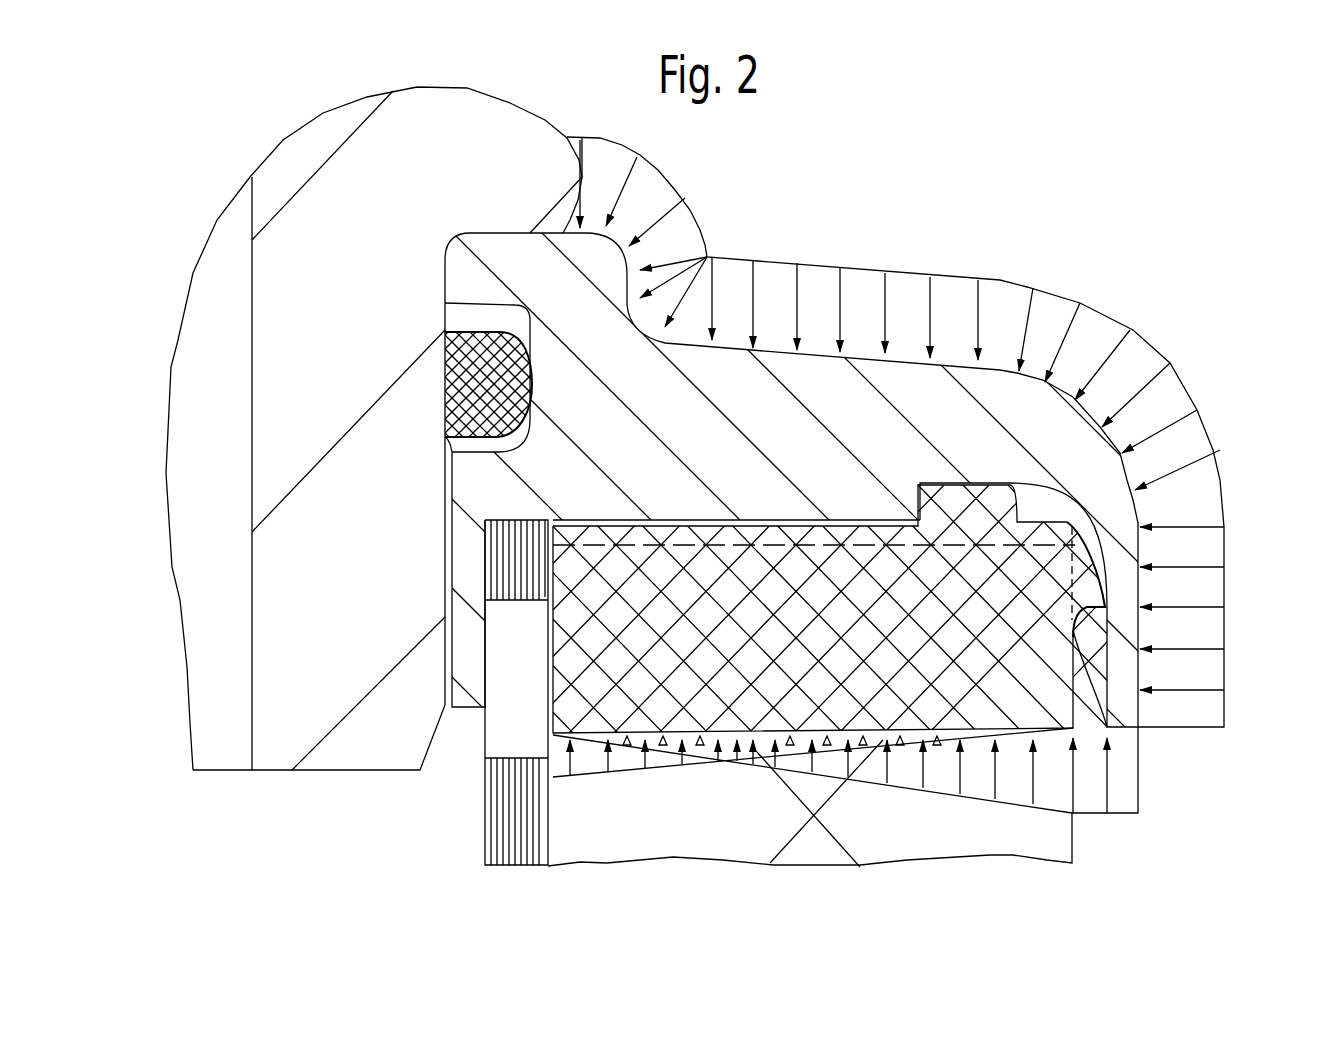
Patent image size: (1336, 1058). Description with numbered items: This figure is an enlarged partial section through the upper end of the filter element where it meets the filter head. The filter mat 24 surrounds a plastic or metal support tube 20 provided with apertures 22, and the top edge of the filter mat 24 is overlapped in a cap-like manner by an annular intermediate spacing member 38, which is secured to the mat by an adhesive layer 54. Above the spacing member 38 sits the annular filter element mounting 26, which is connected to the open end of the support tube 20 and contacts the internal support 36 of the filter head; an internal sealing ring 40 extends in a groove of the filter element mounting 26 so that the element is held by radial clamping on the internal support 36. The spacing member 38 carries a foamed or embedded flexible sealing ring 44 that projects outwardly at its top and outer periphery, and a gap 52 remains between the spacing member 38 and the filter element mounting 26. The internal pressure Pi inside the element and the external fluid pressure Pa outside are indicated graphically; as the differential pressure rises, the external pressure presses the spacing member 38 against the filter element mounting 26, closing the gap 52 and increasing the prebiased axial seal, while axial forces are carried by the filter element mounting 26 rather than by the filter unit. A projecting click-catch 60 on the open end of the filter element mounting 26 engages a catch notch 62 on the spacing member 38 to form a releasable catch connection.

The support tube 20 is at (485, 853).
The apertures 22 is at (505, 648).
The filter mat 24 is at (960, 840).
The filter element mounting 26 is at (677, 413).
The internal support 36 is at (465, 155).
The intermediate spacing member 38 is at (618, 660).
The sealing ring 40 is at (447, 420).
The sealing ring 44 is at (1000, 495).
The gap 52 is at (787, 520).
The adhesive layer 54 is at (733, 733).
The click-catch 60 is at (1097, 647).
The catch notch 62 is at (1100, 522).
The internal pressure Pi is at (897, 445).
The external fluid pressure Pa is at (1192, 590).